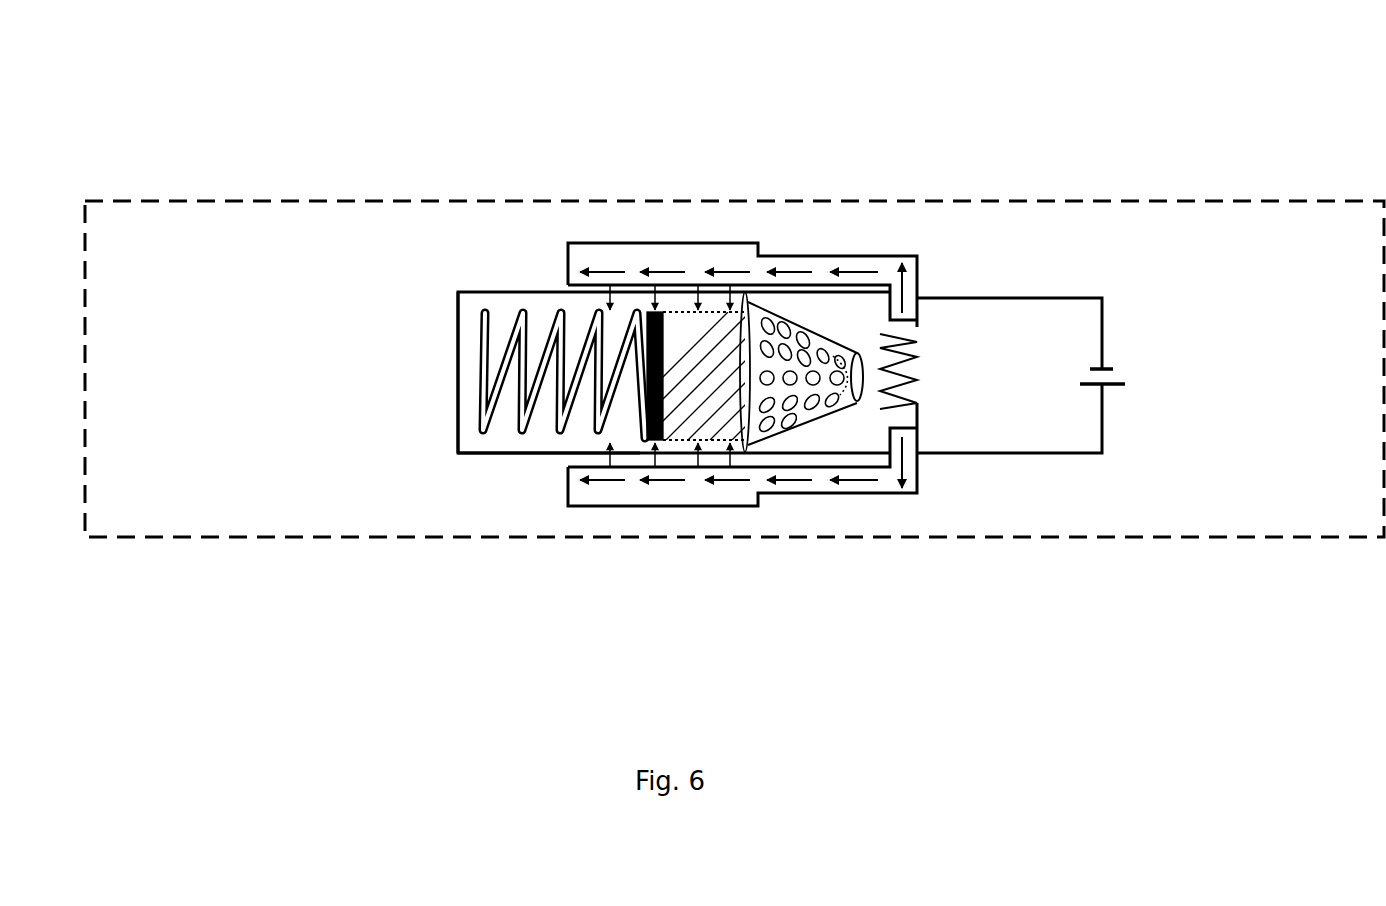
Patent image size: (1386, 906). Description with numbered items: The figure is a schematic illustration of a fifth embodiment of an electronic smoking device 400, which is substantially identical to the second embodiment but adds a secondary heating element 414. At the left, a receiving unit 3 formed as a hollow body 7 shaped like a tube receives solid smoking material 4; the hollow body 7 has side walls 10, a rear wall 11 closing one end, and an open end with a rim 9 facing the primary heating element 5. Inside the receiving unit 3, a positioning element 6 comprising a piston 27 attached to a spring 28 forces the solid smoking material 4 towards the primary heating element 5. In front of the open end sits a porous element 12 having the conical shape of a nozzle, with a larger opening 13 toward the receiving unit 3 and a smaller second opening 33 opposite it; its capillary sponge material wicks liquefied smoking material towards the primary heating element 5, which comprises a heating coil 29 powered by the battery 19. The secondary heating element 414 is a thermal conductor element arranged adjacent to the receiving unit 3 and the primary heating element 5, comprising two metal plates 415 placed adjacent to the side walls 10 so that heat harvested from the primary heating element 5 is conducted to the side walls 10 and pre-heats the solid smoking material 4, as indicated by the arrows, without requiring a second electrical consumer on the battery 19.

The electronic smoking device 400 is at (1148, 201).
The secondary heating element 414 is at (706, 261).
The metal plates 415 is at (598, 267).
The side walls 10 is at (472, 453).
The rear wall 11 is at (458, 393).
The receiving unit 3 is at (542, 453).
The hollow body 7 is at (506, 422).
The positioning element 6 is at (538, 320).
The spring 28 is at (477, 347).
The piston 27 is at (655, 310).
The solid smoking material 4 is at (703, 382).
The opening 13 is at (735, 300).
The rim 9 is at (755, 300).
The second opening 33 is at (856, 402).
The porous element 12 is at (828, 350).
The primary heating element 5 is at (922, 340).
The heating coil 29 is at (917, 407).
The battery 19 is at (1107, 392).